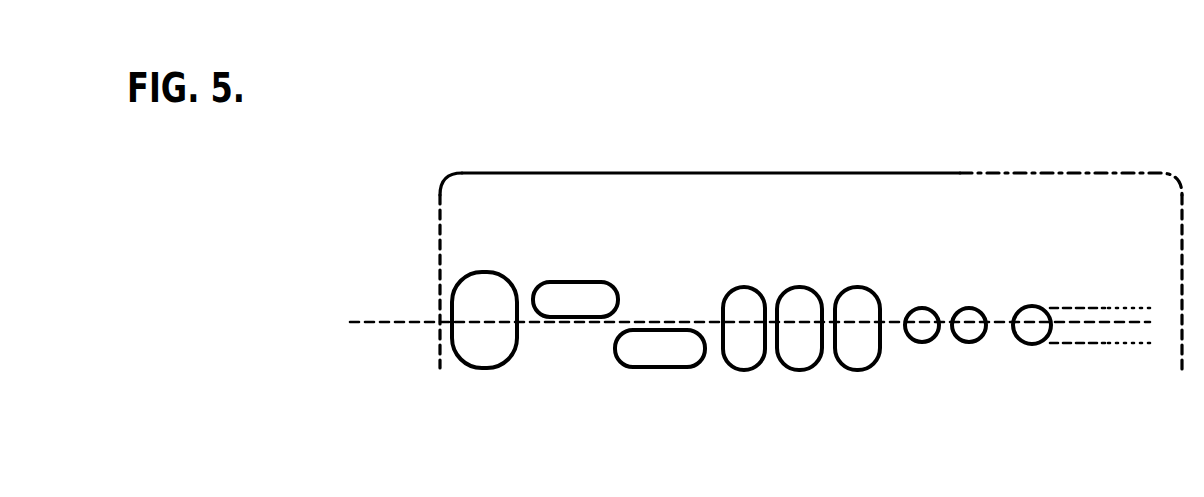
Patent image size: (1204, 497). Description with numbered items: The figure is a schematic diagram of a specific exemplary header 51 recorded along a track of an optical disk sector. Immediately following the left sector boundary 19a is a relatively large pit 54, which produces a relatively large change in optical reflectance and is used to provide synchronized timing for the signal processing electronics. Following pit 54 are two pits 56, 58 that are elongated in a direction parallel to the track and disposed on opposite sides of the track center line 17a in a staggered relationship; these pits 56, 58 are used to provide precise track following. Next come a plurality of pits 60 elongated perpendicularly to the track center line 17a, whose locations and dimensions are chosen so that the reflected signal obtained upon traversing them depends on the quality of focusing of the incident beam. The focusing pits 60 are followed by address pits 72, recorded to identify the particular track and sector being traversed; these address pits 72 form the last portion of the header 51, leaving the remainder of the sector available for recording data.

The header 51 is at (808, 173).
The left sector boundary 19a is at (440, 243).
The track center line 17a is at (388, 322).
The pit 54 is at (478, 275).
The pit 56 is at (552, 282).
The pit 58 is at (655, 362).
The pits 60 is at (885, 370).
The address pits 72 is at (1065, 298).